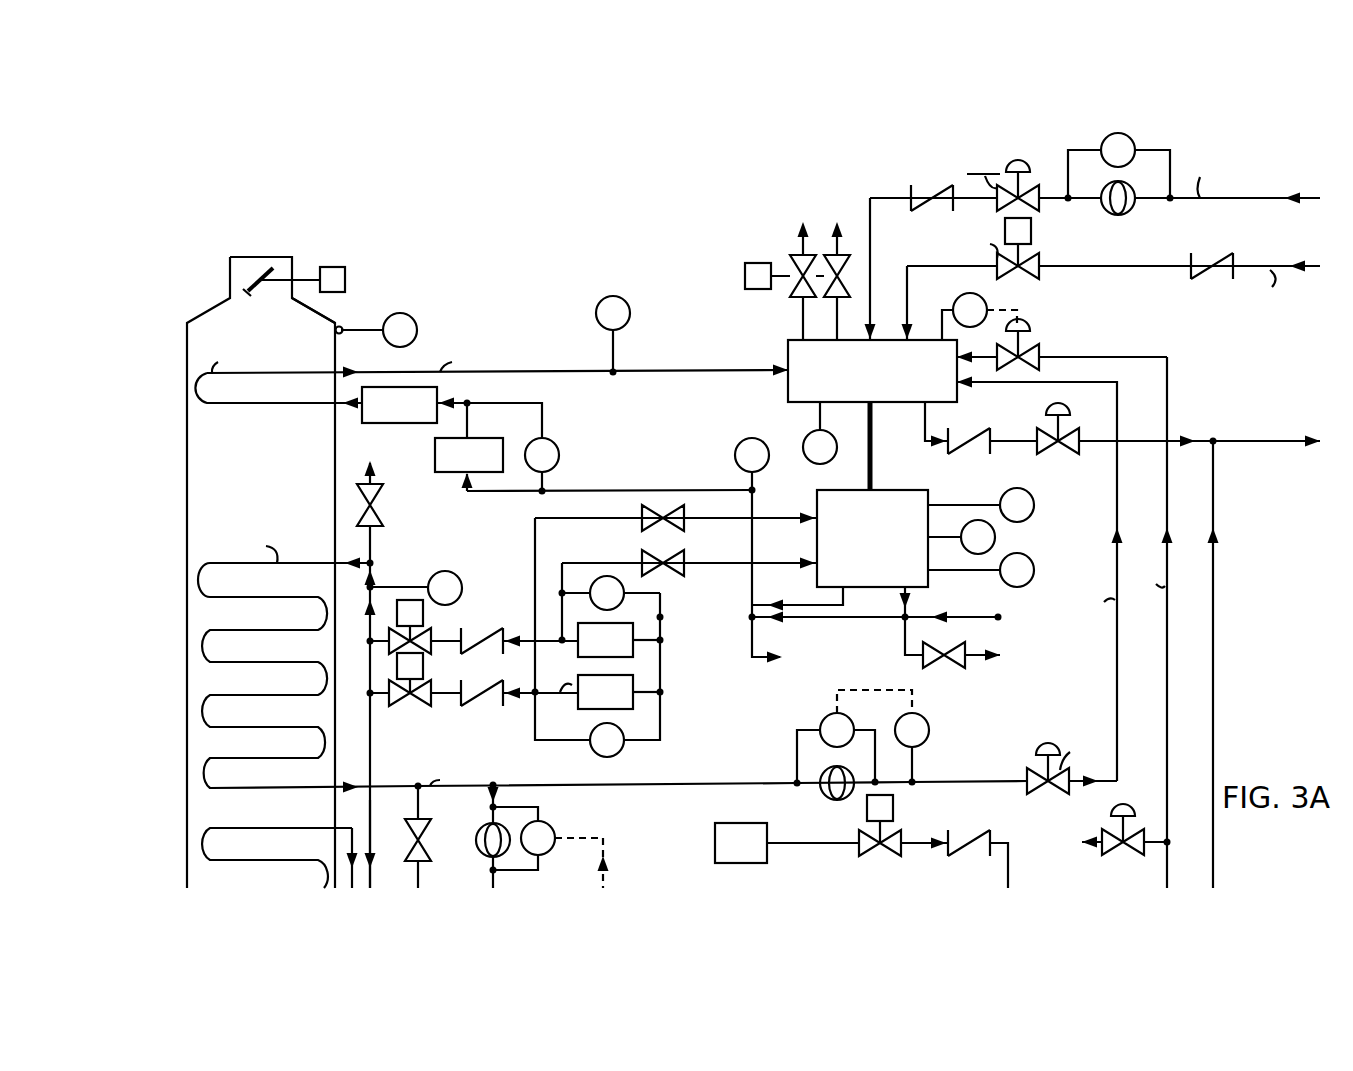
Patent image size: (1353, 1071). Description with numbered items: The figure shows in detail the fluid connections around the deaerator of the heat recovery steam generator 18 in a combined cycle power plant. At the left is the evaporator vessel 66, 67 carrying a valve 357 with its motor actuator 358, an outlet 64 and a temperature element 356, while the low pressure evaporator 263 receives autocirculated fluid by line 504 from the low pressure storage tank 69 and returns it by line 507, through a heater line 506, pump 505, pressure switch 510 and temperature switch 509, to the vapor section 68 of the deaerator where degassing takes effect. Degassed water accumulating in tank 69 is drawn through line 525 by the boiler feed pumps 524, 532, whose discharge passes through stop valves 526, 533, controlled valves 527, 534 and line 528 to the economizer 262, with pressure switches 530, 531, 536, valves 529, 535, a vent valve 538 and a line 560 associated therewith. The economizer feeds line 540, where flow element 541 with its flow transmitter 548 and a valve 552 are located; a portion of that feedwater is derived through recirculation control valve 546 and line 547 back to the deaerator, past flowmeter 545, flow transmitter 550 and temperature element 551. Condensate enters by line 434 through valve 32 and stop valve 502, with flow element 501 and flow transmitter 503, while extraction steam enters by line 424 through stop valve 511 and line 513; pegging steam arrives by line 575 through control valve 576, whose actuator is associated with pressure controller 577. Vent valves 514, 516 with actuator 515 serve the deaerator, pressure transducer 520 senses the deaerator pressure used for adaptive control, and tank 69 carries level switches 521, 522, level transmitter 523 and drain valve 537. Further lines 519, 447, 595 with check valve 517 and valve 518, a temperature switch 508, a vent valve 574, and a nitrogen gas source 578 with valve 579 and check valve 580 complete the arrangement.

The evaporator vessel 66 is at (255, 562).
The evaporator vessel 67 is at (230, 272).
The valve 357 is at (252, 292).
The motor actuator 358 is at (328, 267).
The vessel outlet 64 is at (318, 310).
The temperature element 356 is at (413, 322).
The line 507 is at (683, 370).
The low pressure evaporator 263 is at (272, 405).
The heat recovery steam generator 18 is at (620, 249).
The temperature switch 509 is at (597, 316).
The heater line 506 is at (417, 388).
The pump 505 is at (457, 474).
The pressure switch 510 is at (557, 452).
The vent valve 538 is at (382, 510).
The line 528 is at (368, 615).
The line 560 is at (400, 820).
The economizer 262 is at (263, 790).
The line 540 is at (392, 782).
The pressure switch 531 is at (444, 571).
The controlled valve 527 is at (430, 630).
The stop valve 526 is at (482, 650).
The controlled valve 534 is at (412, 705).
The stop valve 533 is at (484, 698).
The boiler feed pump 524 is at (633, 633).
The boiler feed pump 532 is at (633, 680).
The pressure switch 536 is at (591, 748).
The pressure switch 530 is at (598, 576).
The valve 535 is at (672, 515).
The valve 529 is at (672, 560).
The temperature switch 508 is at (742, 440).
The line 504 is at (805, 604).
The line 525 is at (830, 618).
The deaerator vapor section 68 is at (787, 347).
The pressure transducer 520 is at (803, 445).
The vent valve 514 is at (792, 262).
The actuator 515 is at (744, 276).
The vent valve 516 is at (850, 288).
The stop valve 502 is at (925, 188).
The line 513 is at (927, 266).
The pressure controller 577 is at (958, 306).
The valve VV1 32 is at (1026, 164).
The line 434 is at (1243, 199).
The flow element 501 is at (1106, 212).
The flow transmitter 503 is at (1133, 140).
The line 424 is at (1282, 264).
The stop valve 511 is at (1207, 258).
The control valve 576 is at (1032, 352).
The line 575 is at (1165, 708).
The line 547 is at (1115, 700).
The line 519 is at (1135, 432).
The outlet line 447 is at (1268, 440).
The check valve 517 is at (968, 432).
The valve 518 is at (1066, 432).
The line 595 is at (1213, 708).
The low pressure storage tank 69 is at (894, 490).
The level switch 521 is at (1030, 497).
The level switch 522 is at (998, 539).
The level transmitter 523 is at (1035, 572).
The drain valve 537 is at (946, 668).
The flowmeter 545 is at (820, 792).
The flow transmitter 550 is at (822, 718).
The temperature element 551 is at (927, 721).
The recirculation control valve 546 is at (1036, 752).
The vent valve 574 is at (1107, 828).
The nitrogen gas source 578 is at (710, 838).
The valve 579 is at (859, 842).
The check valve 580 is at (968, 838).
The valve 552 is at (431, 838).
The flow element 541 is at (476, 844).
The flow transmitter 548 is at (545, 824).